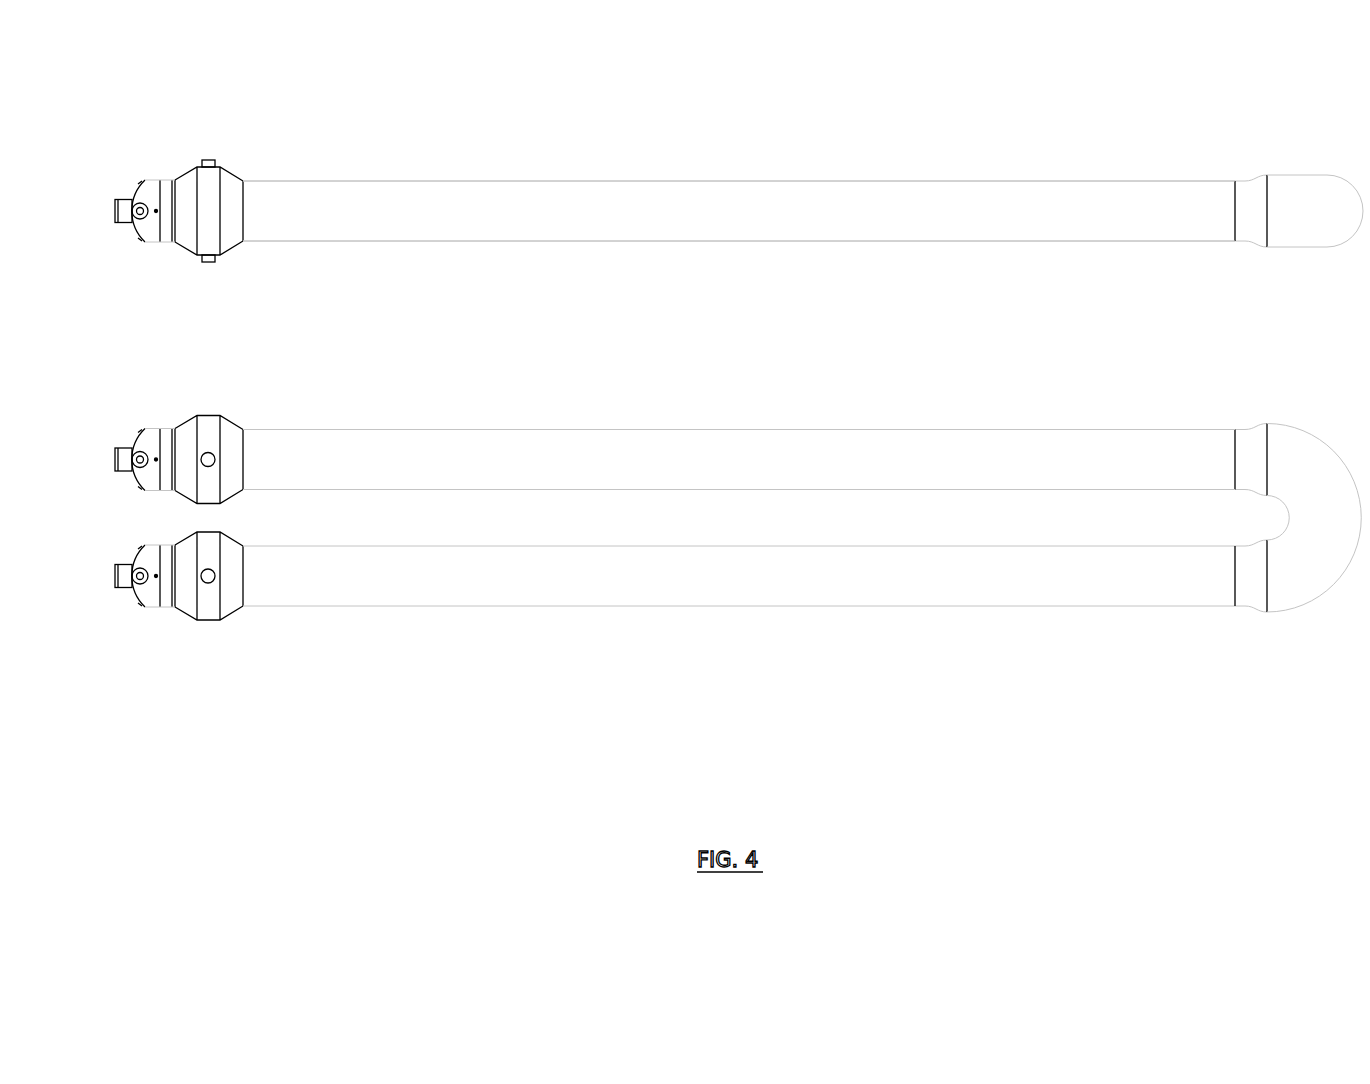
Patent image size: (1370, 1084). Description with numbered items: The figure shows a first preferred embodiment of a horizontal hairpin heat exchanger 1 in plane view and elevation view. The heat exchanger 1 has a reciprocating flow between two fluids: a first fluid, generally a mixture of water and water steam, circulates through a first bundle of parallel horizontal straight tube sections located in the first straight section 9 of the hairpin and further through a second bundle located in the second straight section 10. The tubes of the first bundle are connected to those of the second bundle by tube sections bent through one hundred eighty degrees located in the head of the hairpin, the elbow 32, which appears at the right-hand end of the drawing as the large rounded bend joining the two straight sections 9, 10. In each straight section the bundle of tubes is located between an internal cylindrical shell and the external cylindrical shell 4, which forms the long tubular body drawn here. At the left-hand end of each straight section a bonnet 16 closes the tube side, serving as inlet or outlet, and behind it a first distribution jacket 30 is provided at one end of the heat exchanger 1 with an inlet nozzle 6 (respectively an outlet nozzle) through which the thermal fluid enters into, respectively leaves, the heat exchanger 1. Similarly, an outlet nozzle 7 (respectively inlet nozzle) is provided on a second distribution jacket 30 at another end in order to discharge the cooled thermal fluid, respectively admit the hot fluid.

The hairpin heat exchanger 1 is at (863, 143).
The external cylindrical shell 4 is at (785, 240).
The thermal fluid inlet 6 is at (206, 160).
The thermal fluid outlet 7 is at (209, 261).
The first straight section 9 is at (533, 423).
The second straight section 10 is at (515, 615).
The bonnet 16 is at (149, 193).
The distribution jacket 30 is at (225, 167).
The elbow 32 is at (1310, 228).